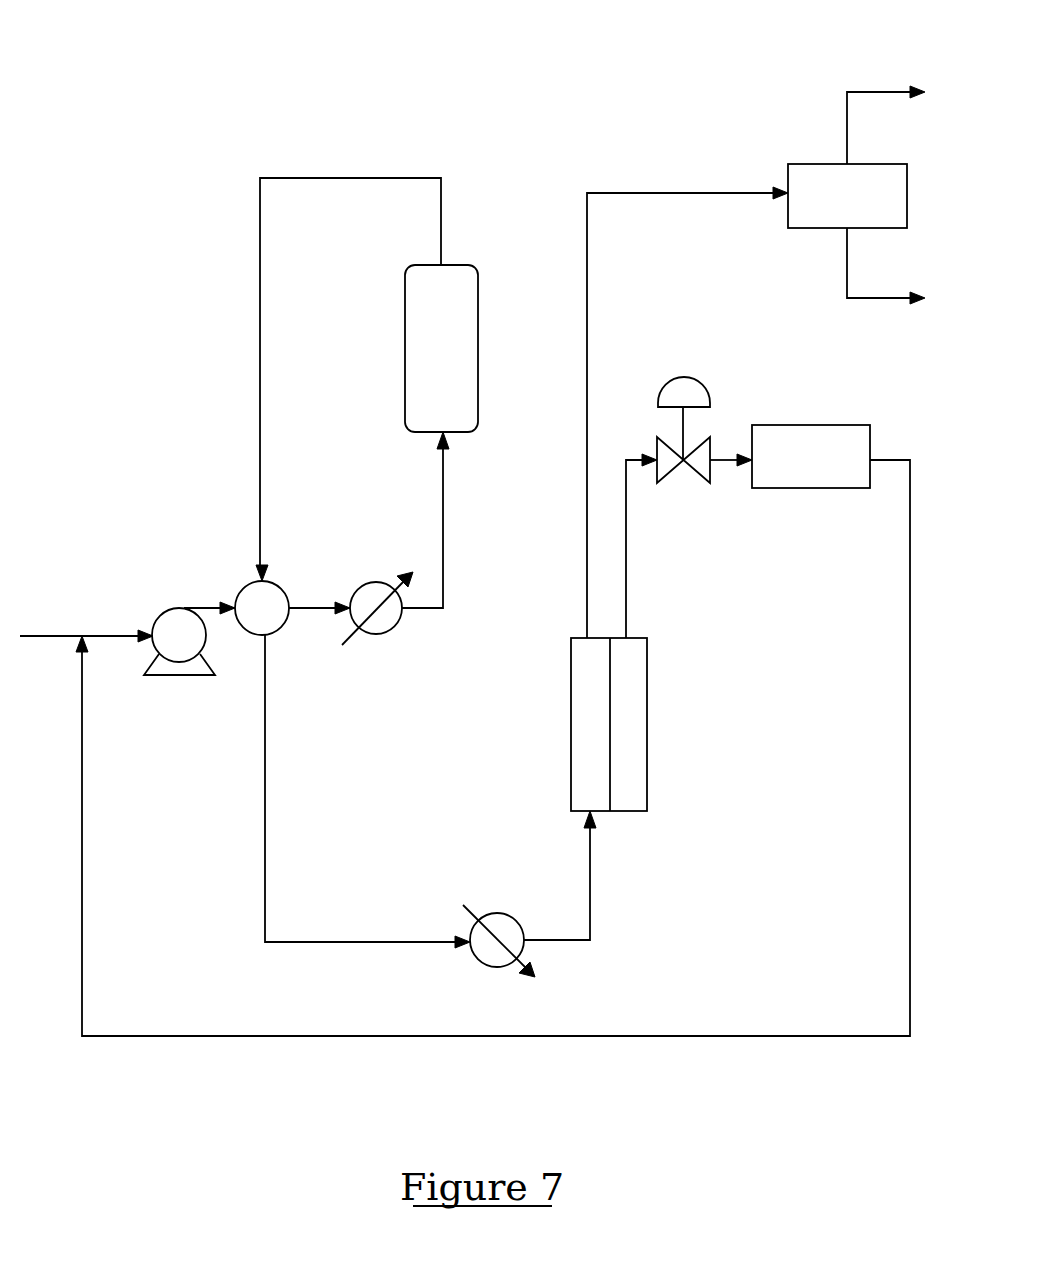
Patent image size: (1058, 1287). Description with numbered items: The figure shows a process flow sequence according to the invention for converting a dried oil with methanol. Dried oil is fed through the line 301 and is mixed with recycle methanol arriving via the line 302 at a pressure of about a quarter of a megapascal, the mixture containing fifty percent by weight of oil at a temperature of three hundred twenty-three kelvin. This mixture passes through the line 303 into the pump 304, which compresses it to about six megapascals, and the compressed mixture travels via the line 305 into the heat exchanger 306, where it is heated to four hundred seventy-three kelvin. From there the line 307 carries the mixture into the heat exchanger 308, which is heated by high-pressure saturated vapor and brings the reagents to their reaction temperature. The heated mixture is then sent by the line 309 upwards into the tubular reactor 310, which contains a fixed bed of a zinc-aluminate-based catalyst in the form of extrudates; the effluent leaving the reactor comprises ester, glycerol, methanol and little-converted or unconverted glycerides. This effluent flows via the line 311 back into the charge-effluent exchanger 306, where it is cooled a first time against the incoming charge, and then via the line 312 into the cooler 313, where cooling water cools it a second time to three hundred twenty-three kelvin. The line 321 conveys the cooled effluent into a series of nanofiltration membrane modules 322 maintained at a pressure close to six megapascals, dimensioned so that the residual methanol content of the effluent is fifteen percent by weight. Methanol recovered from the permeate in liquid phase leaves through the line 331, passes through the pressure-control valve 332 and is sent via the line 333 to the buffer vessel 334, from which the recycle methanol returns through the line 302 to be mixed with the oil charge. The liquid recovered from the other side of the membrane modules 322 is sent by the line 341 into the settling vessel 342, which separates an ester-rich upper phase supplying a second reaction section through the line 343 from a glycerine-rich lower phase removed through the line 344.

The line 301 is at (43, 634).
The line 302 is at (82, 848).
The line 303 is at (115, 634).
The pump 304 is at (172, 677).
The line 305 is at (203, 600).
The heat exchanger 306 is at (290, 590).
The line 307 is at (311, 612).
The heat exchanger 308 is at (380, 635).
The line 309 is at (427, 610).
The tubular reactor 310 is at (405, 362).
The line 311 is at (260, 297).
The line 312 is at (265, 777).
The cooler 313 is at (512, 962).
The line 321 is at (590, 872).
The nanofiltration membrane modules 322 is at (647, 728).
The line 331 is at (626, 593).
The pressure-control valve 332 is at (683, 375).
The line 333 is at (728, 455).
The buffer vessel 334 is at (785, 425).
The line 341 is at (647, 193).
The settling vessel 342 is at (832, 164).
The line 343 is at (862, 91).
The line 344 is at (863, 300).